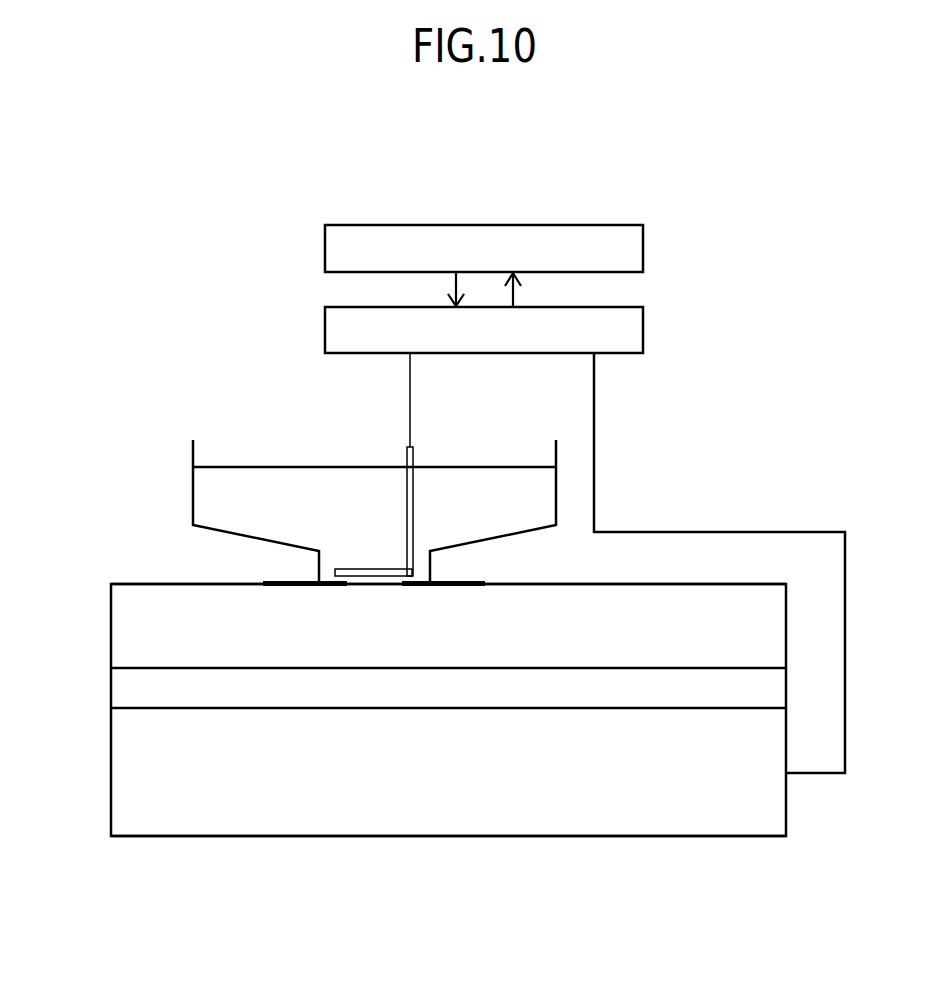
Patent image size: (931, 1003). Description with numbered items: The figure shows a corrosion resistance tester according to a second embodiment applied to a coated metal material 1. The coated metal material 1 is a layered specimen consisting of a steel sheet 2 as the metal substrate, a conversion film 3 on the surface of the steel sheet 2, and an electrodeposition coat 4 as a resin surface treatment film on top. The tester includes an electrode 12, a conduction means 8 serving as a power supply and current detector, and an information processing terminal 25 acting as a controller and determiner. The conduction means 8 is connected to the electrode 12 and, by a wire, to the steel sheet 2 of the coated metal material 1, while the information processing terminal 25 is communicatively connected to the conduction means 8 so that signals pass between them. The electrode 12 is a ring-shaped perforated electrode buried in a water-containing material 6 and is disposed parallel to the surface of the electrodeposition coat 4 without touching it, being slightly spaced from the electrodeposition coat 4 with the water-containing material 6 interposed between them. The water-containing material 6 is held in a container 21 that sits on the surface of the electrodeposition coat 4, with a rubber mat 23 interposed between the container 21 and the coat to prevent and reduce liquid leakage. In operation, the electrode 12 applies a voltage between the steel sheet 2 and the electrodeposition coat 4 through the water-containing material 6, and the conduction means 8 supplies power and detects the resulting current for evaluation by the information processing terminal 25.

The information processing terminal 25 is at (647, 250).
The conduction means 8 is at (647, 333).
The container 21 is at (193, 452).
The water-containing material 6 is at (205, 506).
The electrode 12 is at (368, 573).
The rubber mat 23 is at (415, 584).
The coated metal material 1 is at (62, 620).
The electrodeposition coat 4 is at (125, 641).
The conversion film 3 is at (125, 688).
The steel sheet 2 is at (125, 744).